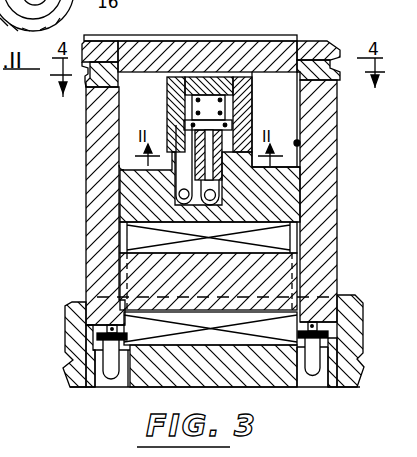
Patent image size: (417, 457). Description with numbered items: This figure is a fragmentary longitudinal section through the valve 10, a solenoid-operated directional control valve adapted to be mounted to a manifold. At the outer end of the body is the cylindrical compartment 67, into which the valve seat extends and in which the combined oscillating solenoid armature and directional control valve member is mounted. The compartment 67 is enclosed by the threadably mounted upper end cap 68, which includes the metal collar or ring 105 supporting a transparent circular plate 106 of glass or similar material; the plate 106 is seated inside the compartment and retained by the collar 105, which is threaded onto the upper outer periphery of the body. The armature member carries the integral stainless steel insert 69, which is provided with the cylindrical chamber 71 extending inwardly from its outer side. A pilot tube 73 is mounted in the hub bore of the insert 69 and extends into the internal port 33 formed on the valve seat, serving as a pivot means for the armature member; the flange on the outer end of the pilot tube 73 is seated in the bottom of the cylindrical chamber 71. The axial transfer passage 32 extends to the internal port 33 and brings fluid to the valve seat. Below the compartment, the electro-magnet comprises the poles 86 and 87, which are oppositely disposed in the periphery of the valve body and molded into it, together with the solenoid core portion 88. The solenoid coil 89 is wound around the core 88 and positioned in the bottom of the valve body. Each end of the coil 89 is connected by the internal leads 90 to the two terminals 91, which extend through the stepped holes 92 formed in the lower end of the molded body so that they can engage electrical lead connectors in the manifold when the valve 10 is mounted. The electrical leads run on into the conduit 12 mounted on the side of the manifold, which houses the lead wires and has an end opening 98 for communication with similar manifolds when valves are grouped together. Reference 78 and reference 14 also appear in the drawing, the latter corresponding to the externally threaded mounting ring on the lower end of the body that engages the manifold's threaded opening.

The valve 10 is at (82, 128).
The metal collar or ring 105 is at (320, 18).
The transparent circular plate 106 is at (208, 50).
The upper end cap 68 is at (337, 25).
The pole 87 is at (102, 238).
The pole 86 is at (329, 240).
The chamber 78 is at (283, 122).
The cylindrical compartment 67 is at (299, 143).
The insert 69 is at (178, 92).
The pilot tube 73 is at (242, 160).
The cylindrical chamber 71 is at (233, 99).
The internal port 33 is at (224, 160).
The axial transfer passage 32 is at (220, 188).
The solenoid coil 89 is at (245, 224).
The solenoid core portion 88 is at (147, 268).
The internal leads 90 is at (124, 328).
The base flange 14 is at (72, 318).
The terminals 91 is at (114, 386).
The stepped holes 92 is at (125, 385).
The opening 98 is at (0, 406).
The conduit 12 is at (4, 447).